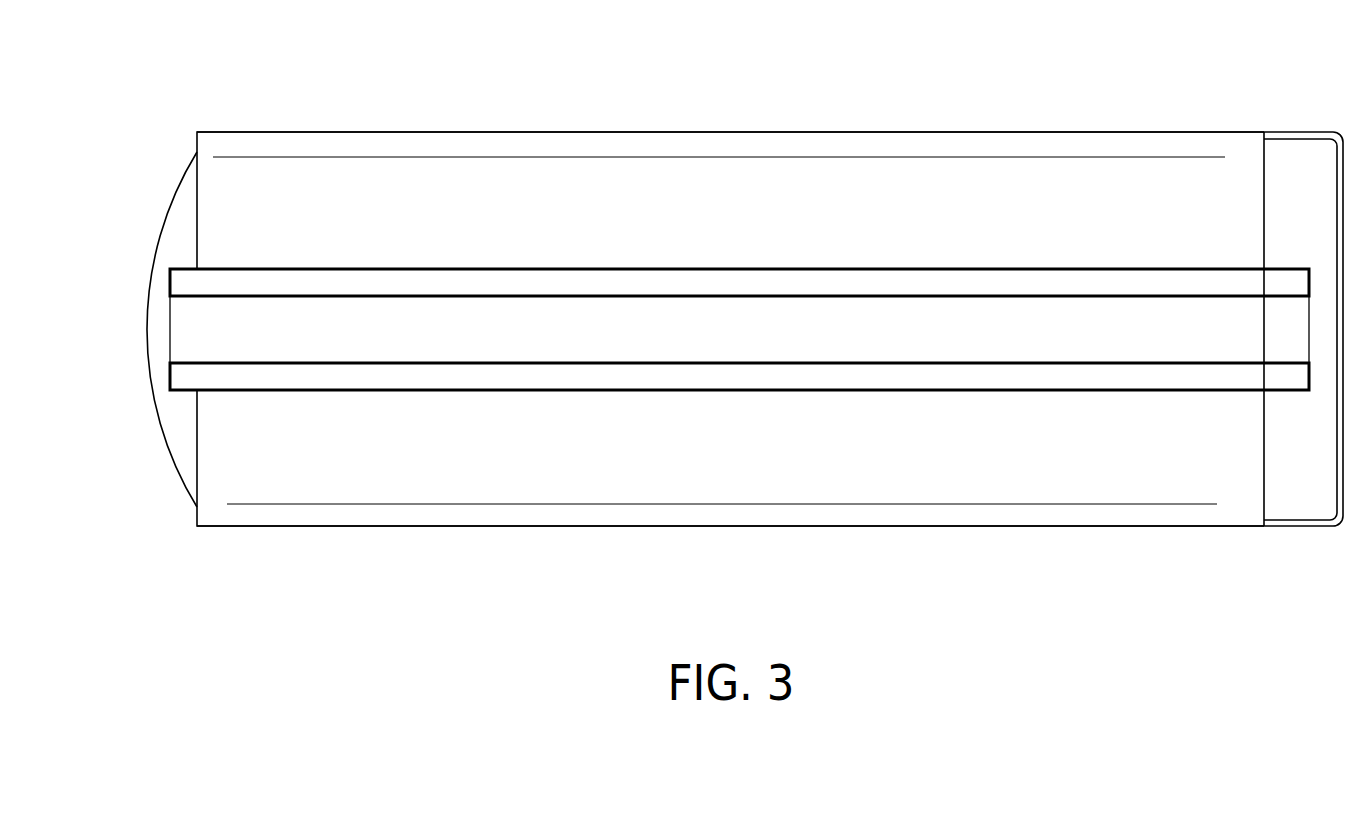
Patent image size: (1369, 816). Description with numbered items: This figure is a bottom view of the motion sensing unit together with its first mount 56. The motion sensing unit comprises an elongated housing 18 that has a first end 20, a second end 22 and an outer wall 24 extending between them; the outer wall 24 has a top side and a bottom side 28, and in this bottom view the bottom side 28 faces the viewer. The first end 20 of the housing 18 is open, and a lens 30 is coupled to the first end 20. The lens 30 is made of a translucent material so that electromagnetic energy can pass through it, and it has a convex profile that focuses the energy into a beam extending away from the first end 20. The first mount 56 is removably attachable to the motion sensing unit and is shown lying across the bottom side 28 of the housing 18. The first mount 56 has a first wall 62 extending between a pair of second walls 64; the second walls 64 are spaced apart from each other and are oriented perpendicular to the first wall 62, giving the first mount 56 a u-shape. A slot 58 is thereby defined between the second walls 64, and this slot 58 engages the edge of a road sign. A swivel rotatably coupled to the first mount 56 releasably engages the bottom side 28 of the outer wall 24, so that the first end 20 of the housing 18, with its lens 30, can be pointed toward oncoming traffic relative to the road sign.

The housing 18 is at (1201, 132).
The first end 20 is at (198, 202).
The second end 22 is at (1264, 177).
The outer wall 24 is at (817, 187).
The bottom side 28 is at (917, 198).
The lens 30 is at (178, 427).
The first mount 56 is at (1133, 400).
The slot 58 is at (570, 333).
The first wall 62 is at (170, 328).
The second walls 64 is at (350, 268).